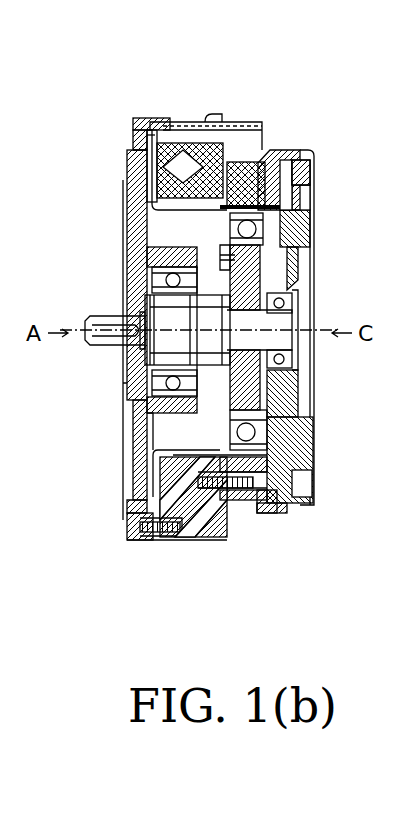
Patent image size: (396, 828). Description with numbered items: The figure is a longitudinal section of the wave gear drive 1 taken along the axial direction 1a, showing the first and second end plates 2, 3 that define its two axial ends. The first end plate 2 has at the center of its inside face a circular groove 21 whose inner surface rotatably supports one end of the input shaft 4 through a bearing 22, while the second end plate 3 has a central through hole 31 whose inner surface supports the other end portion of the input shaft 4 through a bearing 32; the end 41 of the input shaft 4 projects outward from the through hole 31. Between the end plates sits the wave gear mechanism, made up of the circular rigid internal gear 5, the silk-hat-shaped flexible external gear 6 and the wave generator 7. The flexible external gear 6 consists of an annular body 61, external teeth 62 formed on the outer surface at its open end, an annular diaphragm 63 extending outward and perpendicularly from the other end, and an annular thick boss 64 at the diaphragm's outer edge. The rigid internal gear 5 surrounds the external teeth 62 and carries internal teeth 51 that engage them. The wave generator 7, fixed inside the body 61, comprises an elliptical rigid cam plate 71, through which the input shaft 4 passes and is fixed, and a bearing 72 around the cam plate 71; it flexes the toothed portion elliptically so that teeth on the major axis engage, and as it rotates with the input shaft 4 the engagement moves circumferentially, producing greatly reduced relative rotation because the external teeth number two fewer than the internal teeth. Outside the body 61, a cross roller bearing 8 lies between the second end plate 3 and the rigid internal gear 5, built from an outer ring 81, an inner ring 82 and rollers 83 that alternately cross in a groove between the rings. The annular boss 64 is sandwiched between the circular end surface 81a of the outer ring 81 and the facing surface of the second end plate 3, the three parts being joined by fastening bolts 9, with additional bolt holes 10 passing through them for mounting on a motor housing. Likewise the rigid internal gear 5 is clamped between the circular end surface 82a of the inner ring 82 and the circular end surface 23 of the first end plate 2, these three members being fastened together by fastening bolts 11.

The wave gear drive 1 is at (333, 77).
The axial direction 1a is at (108, 352).
The first end plate 2 is at (305, 230).
The circular groove 21 is at (296, 293).
The bearing 22 is at (298, 304).
The circular end surface 23 is at (305, 206).
The second end plate 3 is at (128, 210).
The through hole 31 is at (147, 256).
The bearing 32 is at (160, 212).
The input shaft 4 is at (219, 361).
The end 41 is at (150, 392).
The rigid internal gear 5 is at (268, 150).
The internal teeth 51 is at (292, 152).
The flexible external gear 6 is at (200, 545).
The annular body 61 is at (230, 518).
The external teeth 62 is at (278, 512).
The annular diaphragm 63 is at (140, 478).
The annular thick boss 64 is at (160, 542).
The wave generator 7 is at (268, 422).
The rigid cam plate 71 is at (275, 393).
The bearing 72 is at (290, 462).
The cross roller bearing 8 is at (185, 121).
The outer ring 81 is at (165, 121).
The circular end surface 81a is at (133, 146).
The inner ring 82 is at (157, 176).
The circular end surface 82a is at (240, 160).
The rollers 83 is at (150, 162).
The fastening bolts 9 is at (118, 545).
The bolt holes 10 is at (210, 118).
The fastening bolts 11 is at (300, 495).